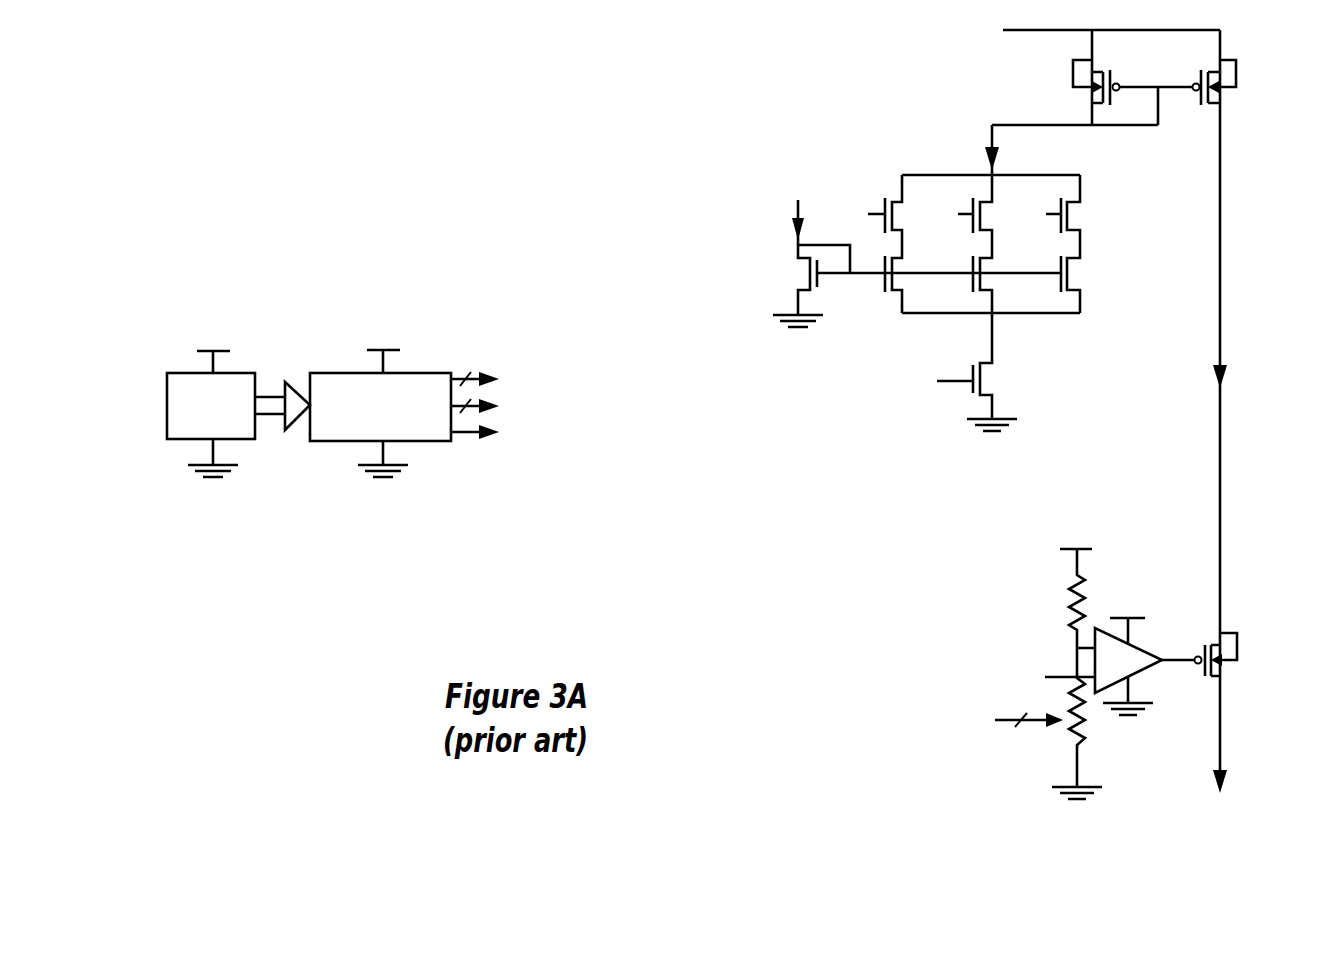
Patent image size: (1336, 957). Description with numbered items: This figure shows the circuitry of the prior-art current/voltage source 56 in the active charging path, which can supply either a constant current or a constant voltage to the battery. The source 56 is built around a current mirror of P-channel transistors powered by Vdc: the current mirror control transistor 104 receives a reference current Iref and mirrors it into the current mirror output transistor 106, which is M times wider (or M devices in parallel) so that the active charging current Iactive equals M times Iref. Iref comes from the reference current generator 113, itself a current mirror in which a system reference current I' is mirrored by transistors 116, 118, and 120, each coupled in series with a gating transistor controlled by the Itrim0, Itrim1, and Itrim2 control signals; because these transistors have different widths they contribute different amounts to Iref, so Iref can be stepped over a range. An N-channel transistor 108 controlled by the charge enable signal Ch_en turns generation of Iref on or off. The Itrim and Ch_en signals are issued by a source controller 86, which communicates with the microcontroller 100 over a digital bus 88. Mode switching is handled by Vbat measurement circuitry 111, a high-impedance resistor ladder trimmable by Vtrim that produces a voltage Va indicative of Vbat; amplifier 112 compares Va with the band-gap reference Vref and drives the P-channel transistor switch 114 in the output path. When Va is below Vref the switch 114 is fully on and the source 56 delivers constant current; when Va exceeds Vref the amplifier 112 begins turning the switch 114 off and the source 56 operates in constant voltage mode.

The current/voltage source 56 is at (828, 64).
The source controller 86 is at (456, 408).
The digital bus 88 is at (273, 408).
The microcontroller 100 is at (203, 407).
The current mirror control transistor 104 is at (1075, 82).
The current mirror output transistor 106 is at (1234, 102).
The N-channel transistor 108 is at (951, 372).
The Vbat measurement circuitry 111 is at (1038, 609).
The amplifier 112 is at (1142, 650).
The reference current generator 113 is at (1088, 443).
The P-channel transistor switch 114 is at (1224, 654).
The current mirror output transistor 116 is at (908, 265).
The current mirror output transistor 118 is at (993, 265).
The current mirror output transistor 120 is at (1061, 290).